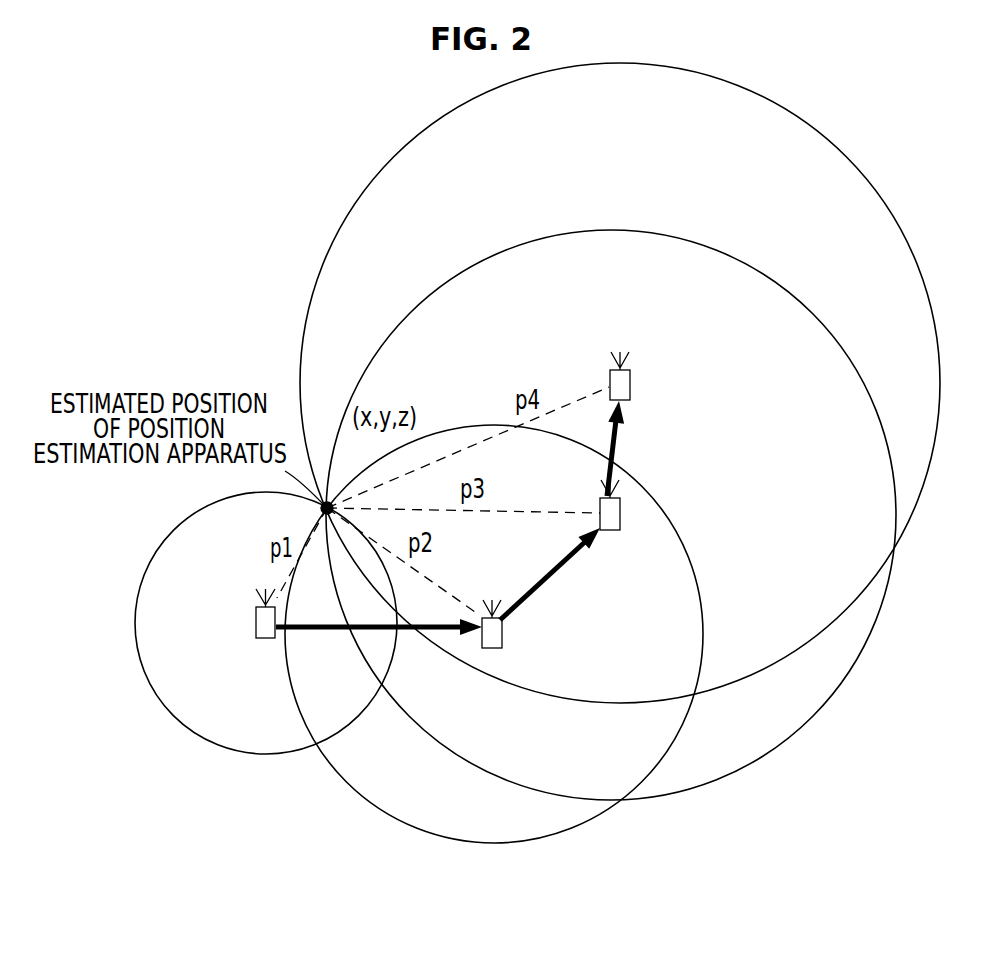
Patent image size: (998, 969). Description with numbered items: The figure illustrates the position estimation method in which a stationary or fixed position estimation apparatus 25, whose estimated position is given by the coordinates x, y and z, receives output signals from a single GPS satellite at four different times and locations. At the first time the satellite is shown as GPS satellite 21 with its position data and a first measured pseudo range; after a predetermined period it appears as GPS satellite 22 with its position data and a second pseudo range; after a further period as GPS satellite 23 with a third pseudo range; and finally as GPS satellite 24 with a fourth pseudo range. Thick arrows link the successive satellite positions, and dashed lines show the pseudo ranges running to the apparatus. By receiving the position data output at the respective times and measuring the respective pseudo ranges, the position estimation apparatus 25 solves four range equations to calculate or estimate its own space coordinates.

The GPS satellite 21 is at (265, 638).
The GPS satellite 22 is at (502, 640).
The GPS satellite 23 is at (620, 515).
The GPS satellite 24 is at (630, 385).
The position estimation apparatus 25 is at (333, 494).